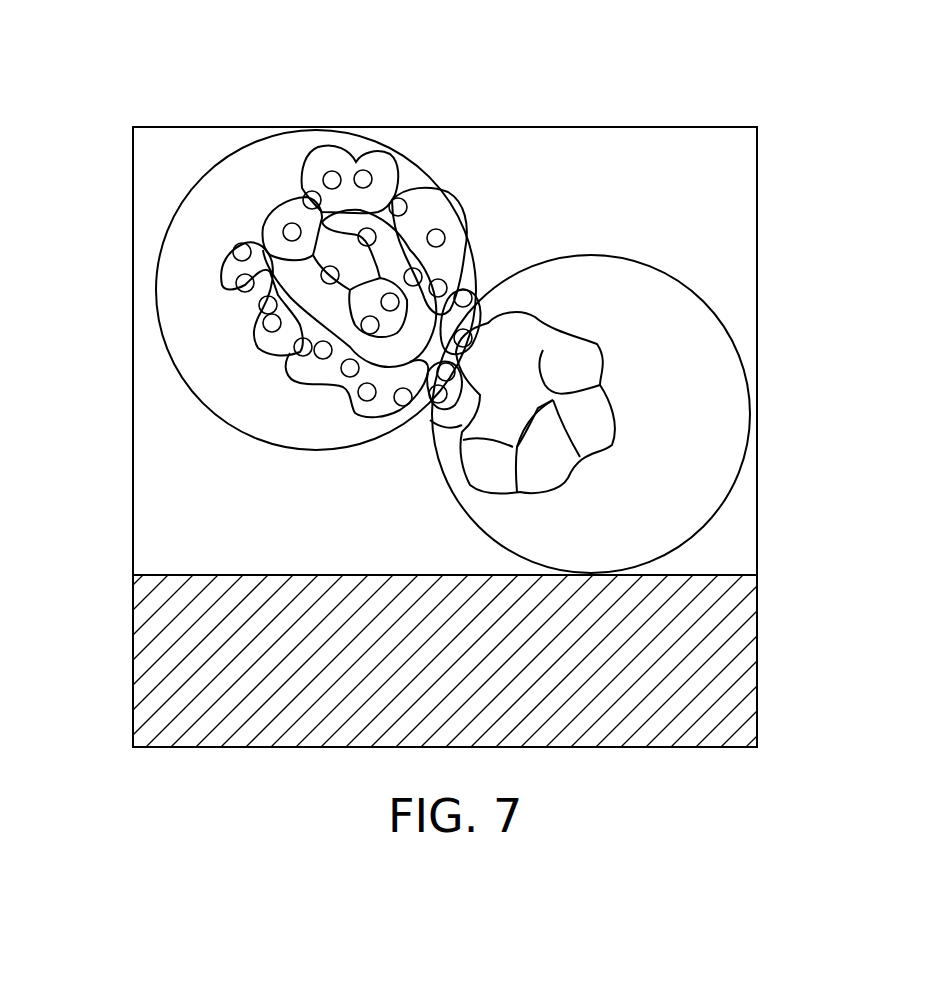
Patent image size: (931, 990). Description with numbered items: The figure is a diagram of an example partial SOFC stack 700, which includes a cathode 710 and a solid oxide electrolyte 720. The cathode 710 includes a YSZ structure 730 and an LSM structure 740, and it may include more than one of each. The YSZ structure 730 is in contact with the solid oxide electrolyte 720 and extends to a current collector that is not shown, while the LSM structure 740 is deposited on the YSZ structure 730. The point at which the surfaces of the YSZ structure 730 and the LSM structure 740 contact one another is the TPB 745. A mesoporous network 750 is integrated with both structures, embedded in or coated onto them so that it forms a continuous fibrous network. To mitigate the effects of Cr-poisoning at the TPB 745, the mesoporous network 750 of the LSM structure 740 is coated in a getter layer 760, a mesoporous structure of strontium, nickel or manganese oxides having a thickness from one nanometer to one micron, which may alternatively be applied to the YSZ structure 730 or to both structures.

The partial SOFC stack 700 is at (138, 48).
The cathode 710 is at (742, 127).
The solid oxide electrolyte 720 is at (143, 658).
The YSZ structure 730 is at (708, 400).
The LSM structure 740 is at (222, 176).
The TPB 745 is at (409, 437).
The mesoporous network 750 is at (443, 262).
The getter layer 760 is at (400, 206).